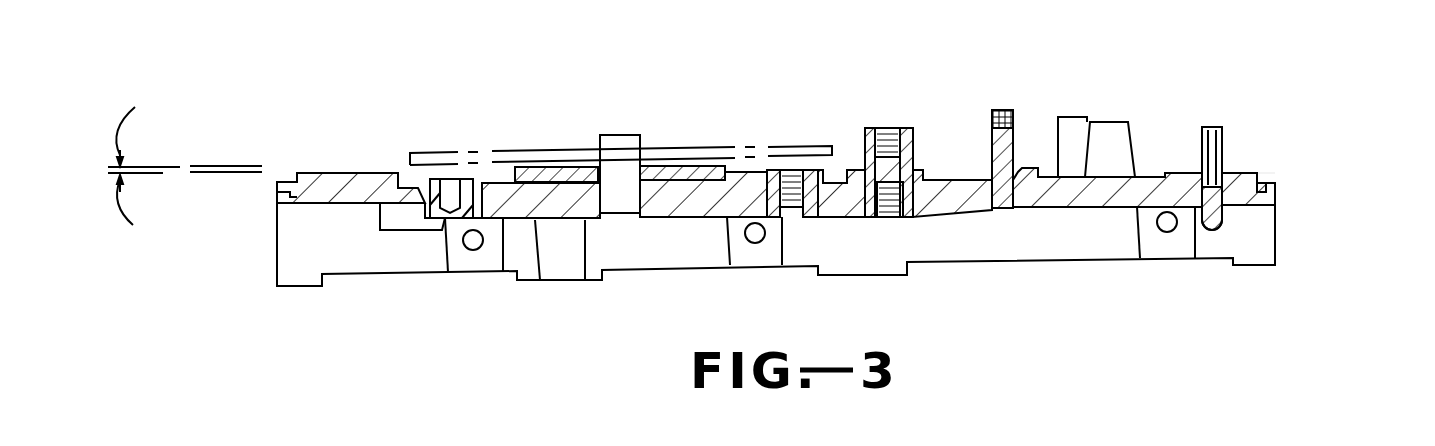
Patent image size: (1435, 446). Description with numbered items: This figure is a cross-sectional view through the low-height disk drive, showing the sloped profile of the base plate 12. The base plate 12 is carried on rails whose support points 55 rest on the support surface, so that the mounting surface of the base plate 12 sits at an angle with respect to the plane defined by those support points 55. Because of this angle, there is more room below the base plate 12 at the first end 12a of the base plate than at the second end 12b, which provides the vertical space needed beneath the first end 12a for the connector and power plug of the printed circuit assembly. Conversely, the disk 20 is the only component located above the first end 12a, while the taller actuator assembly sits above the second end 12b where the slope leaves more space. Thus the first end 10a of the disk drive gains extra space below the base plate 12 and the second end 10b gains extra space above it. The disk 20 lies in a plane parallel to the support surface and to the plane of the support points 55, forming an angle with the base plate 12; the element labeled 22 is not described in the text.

The first end of the disk drive 10a is at (254, 255).
The second end of the disk drive 10b is at (1302, 208).
The base plate 12 is at (960, 249).
The first end of the base plate 12a is at (292, 272).
The second end of the base plate 12b is at (1265, 248).
The disk 20 is at (798, 145).
The clamp plate 22 is at (622, 135).
The support points 55 is at (310, 287).